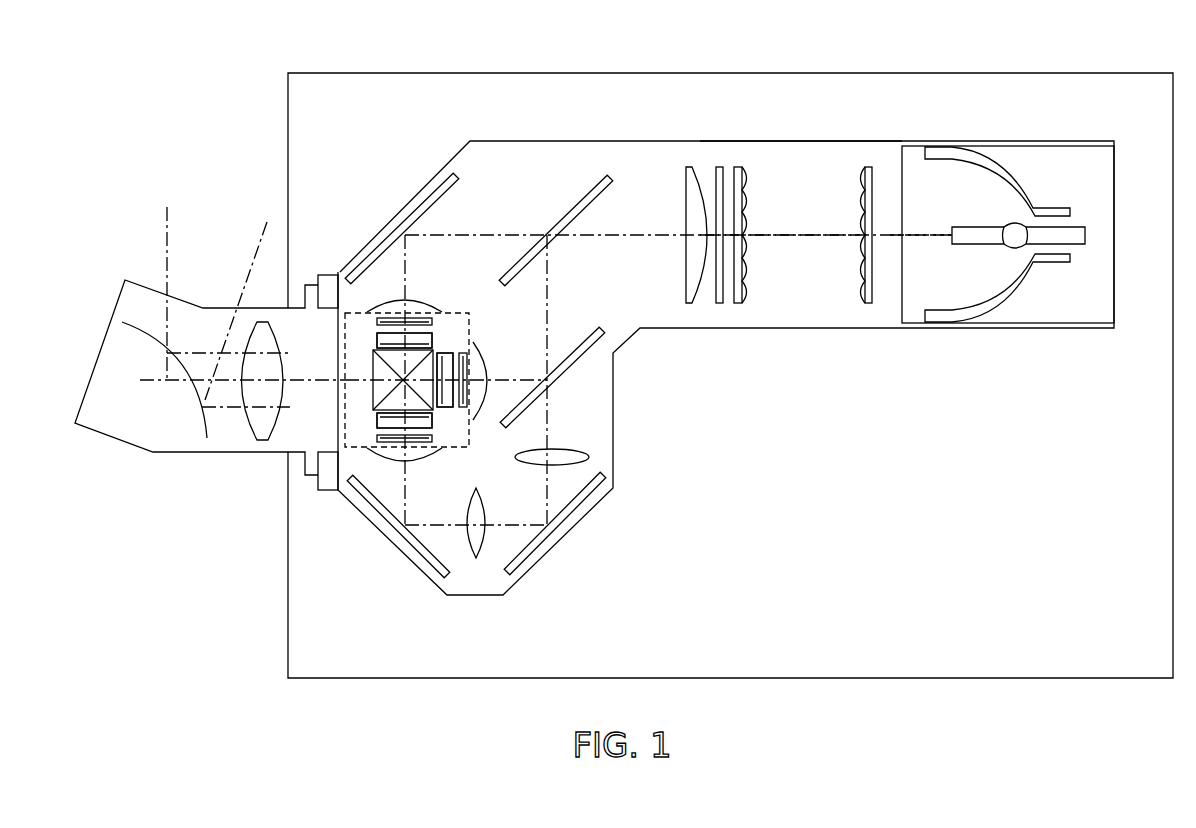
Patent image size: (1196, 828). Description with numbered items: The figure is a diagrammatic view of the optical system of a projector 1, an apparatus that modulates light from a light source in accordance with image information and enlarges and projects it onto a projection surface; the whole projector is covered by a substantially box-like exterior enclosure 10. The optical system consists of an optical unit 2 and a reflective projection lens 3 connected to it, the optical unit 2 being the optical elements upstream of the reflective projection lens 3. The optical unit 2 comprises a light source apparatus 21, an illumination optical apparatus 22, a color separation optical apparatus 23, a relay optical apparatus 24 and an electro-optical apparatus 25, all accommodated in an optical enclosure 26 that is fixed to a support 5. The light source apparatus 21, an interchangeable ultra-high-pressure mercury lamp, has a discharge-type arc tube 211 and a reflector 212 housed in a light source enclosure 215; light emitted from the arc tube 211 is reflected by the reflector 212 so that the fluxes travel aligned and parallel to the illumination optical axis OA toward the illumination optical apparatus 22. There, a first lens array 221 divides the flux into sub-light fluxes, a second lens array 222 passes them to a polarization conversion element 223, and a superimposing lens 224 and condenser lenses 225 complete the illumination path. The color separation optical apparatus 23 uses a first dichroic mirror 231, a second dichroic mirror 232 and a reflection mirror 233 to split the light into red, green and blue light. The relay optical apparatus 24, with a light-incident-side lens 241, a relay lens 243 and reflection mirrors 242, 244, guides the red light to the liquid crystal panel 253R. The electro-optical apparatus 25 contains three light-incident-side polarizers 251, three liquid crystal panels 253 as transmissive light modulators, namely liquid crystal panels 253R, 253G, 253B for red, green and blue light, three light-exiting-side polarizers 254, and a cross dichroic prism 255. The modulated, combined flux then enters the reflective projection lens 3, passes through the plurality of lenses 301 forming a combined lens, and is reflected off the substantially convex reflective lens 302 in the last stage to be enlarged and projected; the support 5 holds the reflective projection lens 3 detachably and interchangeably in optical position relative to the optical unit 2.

The projector 1 is at (996, 44).
The optical unit 2 is at (698, 490).
The reflective projection lens 3 is at (127, 482).
The support 5 is at (331, 481).
The exterior enclosure 10 is at (851, 678).
The light source apparatus 21 is at (936, 346).
The illumination optical apparatus 22 is at (789, 322).
The color separation optical apparatus 23 is at (528, 155).
The relay optical apparatus 24 is at (399, 583).
The electro-optical apparatus 25 is at (355, 366).
The optical enclosure 26 is at (820, 141).
The illumination optical axis OA is at (805, 230).
The arc tube 211 is at (984, 236).
The reflector 212 is at (1018, 277).
The light source enclosure 215 is at (1090, 324).
The first lens array 221 is at (870, 176).
The second lens array 222 is at (740, 176).
The polarization conversion element 223 is at (722, 176).
The superimposing lens 224 is at (690, 176).
The condenser lenses 225 is at (417, 305).
The first dichroic mirror 231 is at (579, 210).
The second dichroic mirror 232 is at (582, 356).
The reflection mirror 233 is at (443, 192).
The light-incident-side lens 241 is at (572, 457).
The reflection mirror 242 is at (526, 560).
The relay lens 243 is at (469, 546).
The reflection mirror 244 is at (421, 563).
The light-incident-side polarizers 251 is at (378, 320).
The liquid crystal panels 253 is at (415, 380).
The liquid crystal panel for B light 253B is at (393, 338).
The liquid crystal panel for G light 253G is at (452, 358).
The liquid crystal panel for R light 253R is at (450, 428).
The light-exiting-side polarizers 254 is at (378, 338).
The cross dichroic prism 255 is at (382, 393).
The lenses 301 is at (262, 431).
The reflective lens 302 is at (187, 394).